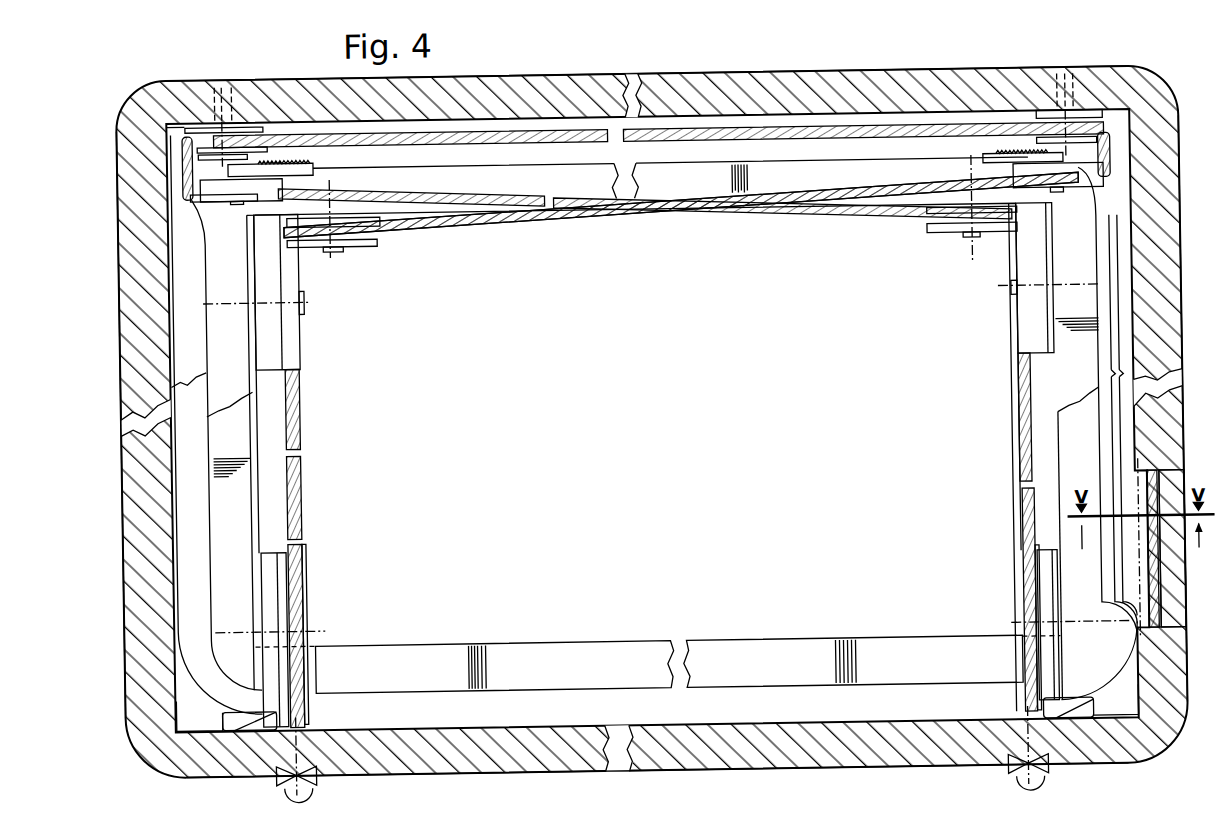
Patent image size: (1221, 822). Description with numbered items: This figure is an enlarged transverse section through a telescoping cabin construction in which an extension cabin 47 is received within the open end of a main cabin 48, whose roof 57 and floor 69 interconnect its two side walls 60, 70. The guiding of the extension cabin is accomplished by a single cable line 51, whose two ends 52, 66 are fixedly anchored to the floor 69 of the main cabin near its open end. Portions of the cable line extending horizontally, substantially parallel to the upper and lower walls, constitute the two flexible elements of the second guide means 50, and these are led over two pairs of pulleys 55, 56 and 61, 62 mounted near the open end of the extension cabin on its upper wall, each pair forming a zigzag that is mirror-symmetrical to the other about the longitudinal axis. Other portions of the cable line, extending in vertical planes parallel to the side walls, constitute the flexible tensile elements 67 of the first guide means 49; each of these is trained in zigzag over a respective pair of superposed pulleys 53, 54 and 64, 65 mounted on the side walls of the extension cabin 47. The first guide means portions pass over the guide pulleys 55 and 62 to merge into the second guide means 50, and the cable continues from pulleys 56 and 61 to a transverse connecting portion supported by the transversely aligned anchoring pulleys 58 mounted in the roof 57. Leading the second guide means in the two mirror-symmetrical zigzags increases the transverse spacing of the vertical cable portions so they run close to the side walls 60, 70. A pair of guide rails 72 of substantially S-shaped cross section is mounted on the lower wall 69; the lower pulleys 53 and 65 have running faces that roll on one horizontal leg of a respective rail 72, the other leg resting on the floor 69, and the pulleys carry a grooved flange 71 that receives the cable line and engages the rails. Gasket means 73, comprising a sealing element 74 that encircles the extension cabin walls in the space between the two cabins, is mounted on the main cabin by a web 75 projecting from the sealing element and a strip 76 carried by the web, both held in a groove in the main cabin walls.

The extension cabin 47 is at (1063, 454).
The main cabin 48 is at (486, 109).
The first guide means 49 is at (320, 389).
The second guide means 50 is at (890, 186).
The single cable line 51 is at (299, 518).
The cable line end 52 is at (1003, 764).
The lower pulley 53 is at (1012, 601).
The upper pulley 54 is at (1014, 316).
The guide pulley 55 is at (955, 243).
The pulley 56 is at (205, 196).
The roof 57 is at (737, 72).
The anchoring pulleys 58 is at (263, 119).
The side wall 60 is at (1185, 290).
The pulley 61 is at (1109, 197).
The guide pulley 62 is at (358, 242).
The upper pulley 64 is at (302, 322).
The lower pulley 65 is at (310, 592).
The cable line end 66 is at (363, 766).
The flexible tensile elements 67 is at (507, 190).
The floor 69 is at (808, 727).
The side wall 70 is at (122, 291).
The grooved flange 71 is at (305, 567).
The guide rail 72 is at (205, 724).
The gasket means 73 is at (176, 671).
The sealing element 74 is at (1106, 430).
The web 75 is at (1147, 487).
The strip 76 is at (1147, 553).